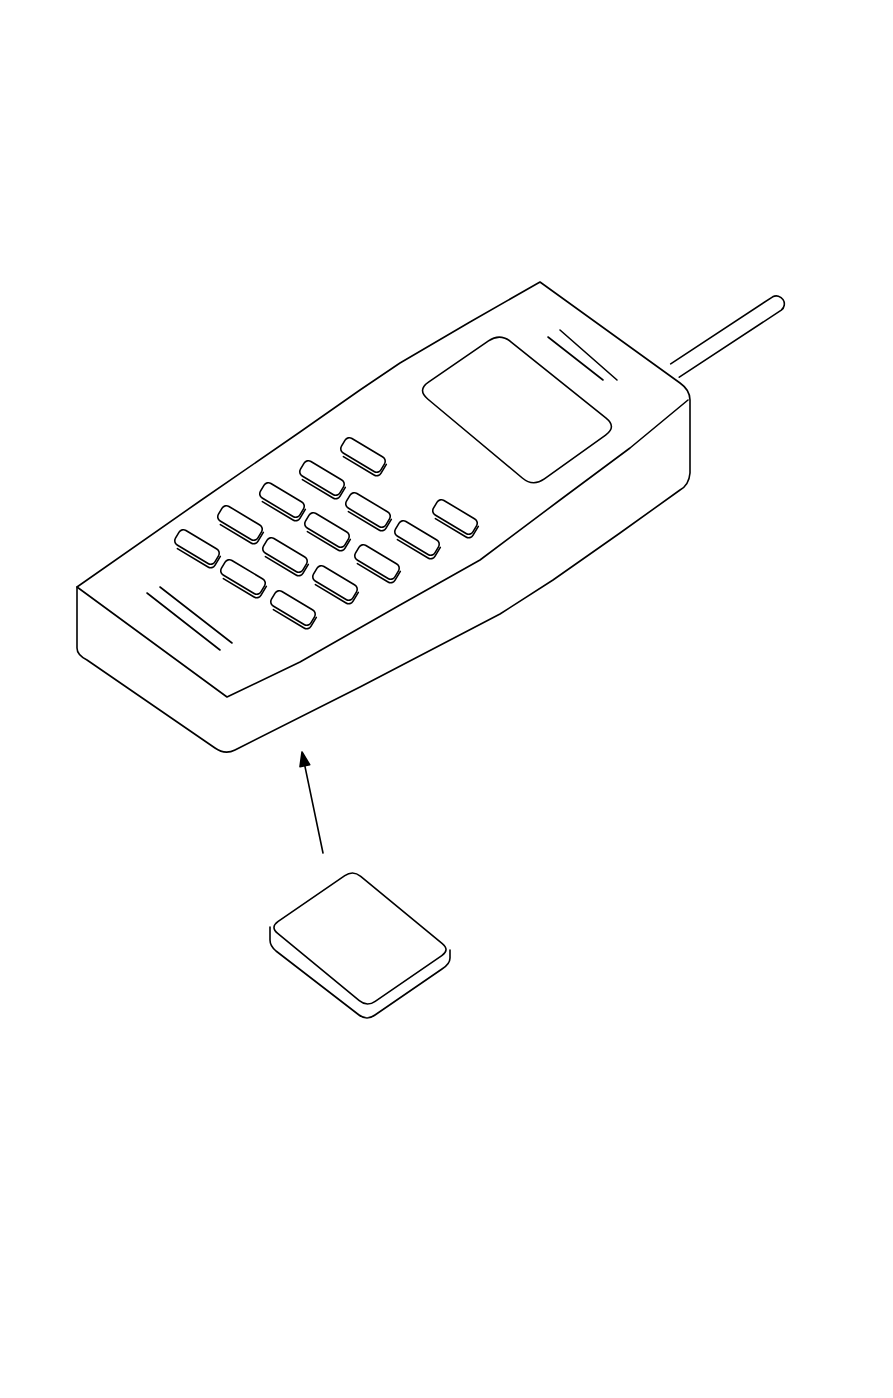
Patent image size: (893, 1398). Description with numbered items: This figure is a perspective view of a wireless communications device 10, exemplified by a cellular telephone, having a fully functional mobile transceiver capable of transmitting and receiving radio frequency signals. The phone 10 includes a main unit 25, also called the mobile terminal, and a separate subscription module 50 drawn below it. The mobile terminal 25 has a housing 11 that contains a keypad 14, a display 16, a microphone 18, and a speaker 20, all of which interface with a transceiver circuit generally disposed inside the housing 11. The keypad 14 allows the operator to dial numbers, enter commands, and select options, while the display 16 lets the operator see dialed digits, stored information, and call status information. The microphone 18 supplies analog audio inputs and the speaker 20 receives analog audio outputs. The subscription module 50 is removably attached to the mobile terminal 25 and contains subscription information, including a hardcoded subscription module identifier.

The wireless communications device 10 is at (630, 167).
The housing 11 is at (167, 517).
The keypad 14 is at (378, 590).
The display 16 is at (500, 397).
The microphone 18 is at (175, 612).
The speaker 20 is at (597, 358).
The main unit 25 is at (190, 455).
The subscription module 50 is at (417, 895).